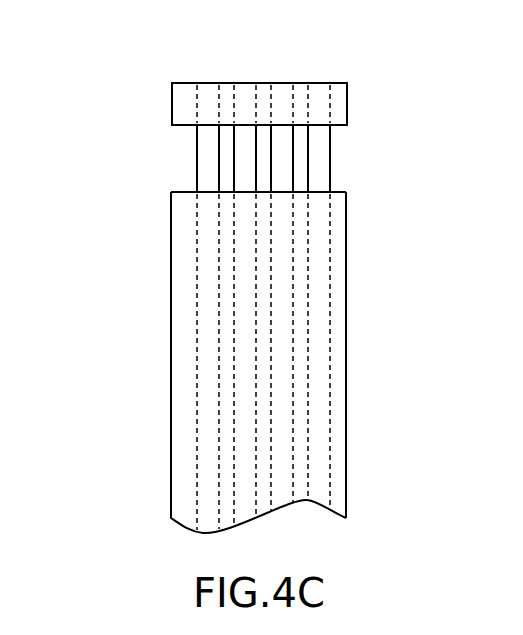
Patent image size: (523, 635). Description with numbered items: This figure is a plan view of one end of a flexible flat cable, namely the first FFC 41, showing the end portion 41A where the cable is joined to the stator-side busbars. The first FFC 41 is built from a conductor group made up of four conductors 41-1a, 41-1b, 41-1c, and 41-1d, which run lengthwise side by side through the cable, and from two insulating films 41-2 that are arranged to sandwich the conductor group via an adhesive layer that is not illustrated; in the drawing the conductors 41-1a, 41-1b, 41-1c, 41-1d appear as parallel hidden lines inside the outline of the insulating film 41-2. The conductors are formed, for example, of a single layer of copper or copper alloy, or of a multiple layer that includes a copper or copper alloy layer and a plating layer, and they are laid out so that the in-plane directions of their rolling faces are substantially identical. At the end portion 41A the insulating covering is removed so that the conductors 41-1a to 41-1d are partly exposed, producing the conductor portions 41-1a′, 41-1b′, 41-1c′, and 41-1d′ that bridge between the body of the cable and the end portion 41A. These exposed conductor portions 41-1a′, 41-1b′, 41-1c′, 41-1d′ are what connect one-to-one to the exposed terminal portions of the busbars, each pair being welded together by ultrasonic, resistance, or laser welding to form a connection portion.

The first FFC 41 is at (353, 470).
The end portion of the first FFC 41A is at (358, 87).
The insulating film 41-2 is at (337, 401).
The conductor 41-1a is at (207, 278).
The conductor 41-1b is at (247, 322).
The conductor 41-1c is at (282, 290).
The conductor 41-1d is at (320, 320).
The conductor portion 41-1a′ is at (205, 148).
The conductor portion 41-1b′ is at (245, 178).
The conductor portion 41-1c′ is at (283, 158).
The conductor portion 41-1d′ is at (320, 173).